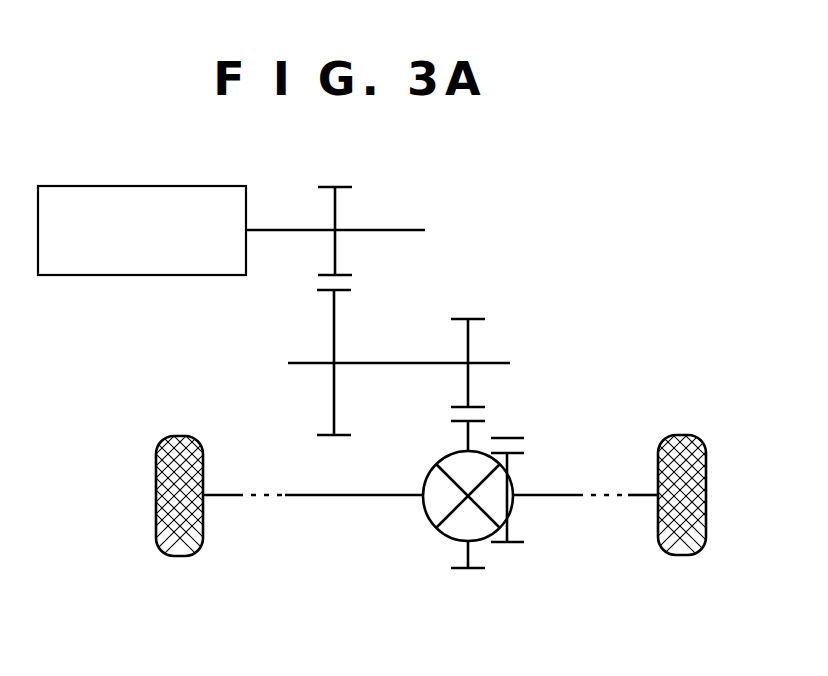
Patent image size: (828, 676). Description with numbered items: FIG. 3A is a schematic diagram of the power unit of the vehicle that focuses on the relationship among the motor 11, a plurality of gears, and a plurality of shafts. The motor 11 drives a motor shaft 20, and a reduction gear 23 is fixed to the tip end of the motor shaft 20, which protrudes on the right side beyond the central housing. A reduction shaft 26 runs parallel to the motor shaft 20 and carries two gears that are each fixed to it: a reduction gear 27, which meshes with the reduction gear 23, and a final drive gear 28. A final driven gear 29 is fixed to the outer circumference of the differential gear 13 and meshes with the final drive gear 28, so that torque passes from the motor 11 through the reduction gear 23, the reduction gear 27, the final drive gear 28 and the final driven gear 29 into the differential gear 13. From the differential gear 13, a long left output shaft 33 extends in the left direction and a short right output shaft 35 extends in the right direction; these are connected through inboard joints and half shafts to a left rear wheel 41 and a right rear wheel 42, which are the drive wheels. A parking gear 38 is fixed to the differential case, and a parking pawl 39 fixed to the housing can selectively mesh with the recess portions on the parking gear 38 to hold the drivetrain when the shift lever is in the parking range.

The motor 11 is at (210, 185).
The motor shaft 20 is at (408, 228).
The reduction gear 23 is at (339, 185).
The reduction shaft 26 is at (413, 361).
The reduction gear 27 is at (336, 438).
The final drive gear 28 is at (476, 318).
The final driven gear 29 is at (472, 571).
The differential gear 13 is at (436, 528).
The left output shaft 33 is at (355, 498).
The right output shaft 35 is at (546, 492).
The parking gear 38 is at (517, 545).
The parking pawl 39 is at (518, 436).
The left rear wheel 41 is at (182, 557).
The right rear wheel 42 is at (685, 556).